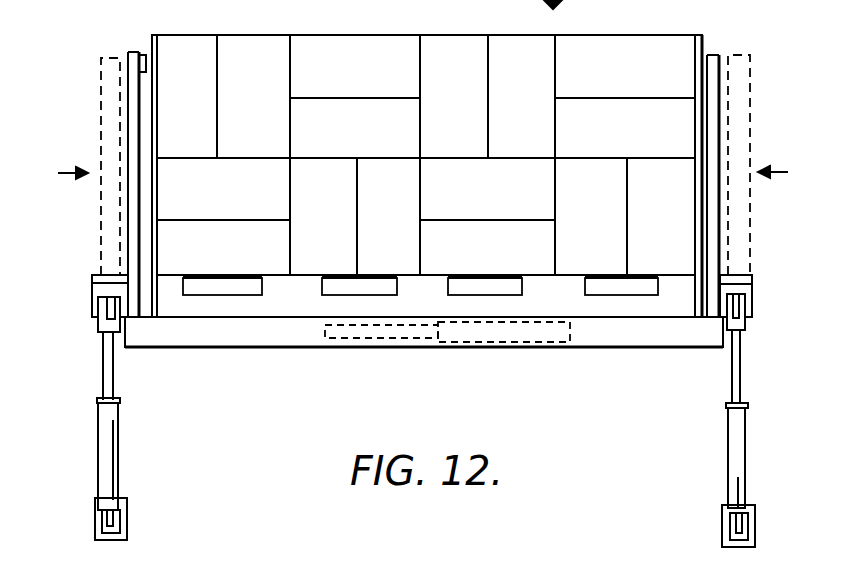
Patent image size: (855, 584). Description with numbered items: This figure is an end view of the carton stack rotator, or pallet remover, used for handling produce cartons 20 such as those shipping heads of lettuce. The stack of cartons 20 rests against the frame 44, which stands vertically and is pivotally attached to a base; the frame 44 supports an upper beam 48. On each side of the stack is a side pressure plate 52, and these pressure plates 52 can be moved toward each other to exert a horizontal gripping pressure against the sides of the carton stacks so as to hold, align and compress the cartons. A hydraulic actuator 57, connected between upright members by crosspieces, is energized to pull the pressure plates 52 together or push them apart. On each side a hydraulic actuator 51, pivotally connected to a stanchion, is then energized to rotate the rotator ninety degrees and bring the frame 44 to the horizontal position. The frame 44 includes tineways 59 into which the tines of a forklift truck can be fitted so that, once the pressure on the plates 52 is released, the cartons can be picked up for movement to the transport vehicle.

The cartons 20 is at (683, 42).
The frame 44 is at (564, 303).
The upper beam 48 is at (647, 340).
The hydraulic actuator 51 is at (112, 448).
The side pressure plates 52 is at (130, 72).
The actuator 57 is at (475, 332).
The tineways 59 is at (322, 282).